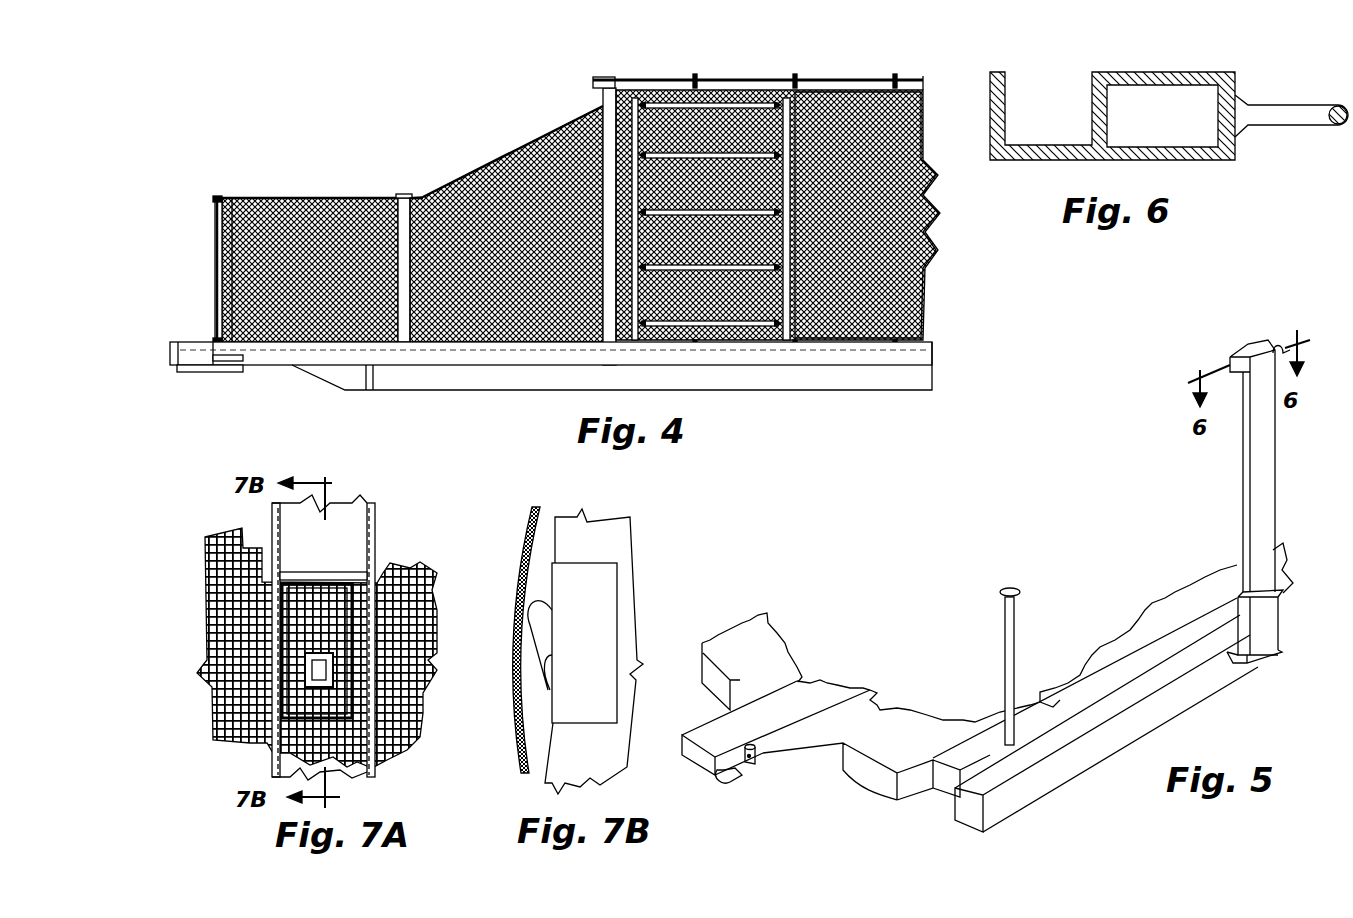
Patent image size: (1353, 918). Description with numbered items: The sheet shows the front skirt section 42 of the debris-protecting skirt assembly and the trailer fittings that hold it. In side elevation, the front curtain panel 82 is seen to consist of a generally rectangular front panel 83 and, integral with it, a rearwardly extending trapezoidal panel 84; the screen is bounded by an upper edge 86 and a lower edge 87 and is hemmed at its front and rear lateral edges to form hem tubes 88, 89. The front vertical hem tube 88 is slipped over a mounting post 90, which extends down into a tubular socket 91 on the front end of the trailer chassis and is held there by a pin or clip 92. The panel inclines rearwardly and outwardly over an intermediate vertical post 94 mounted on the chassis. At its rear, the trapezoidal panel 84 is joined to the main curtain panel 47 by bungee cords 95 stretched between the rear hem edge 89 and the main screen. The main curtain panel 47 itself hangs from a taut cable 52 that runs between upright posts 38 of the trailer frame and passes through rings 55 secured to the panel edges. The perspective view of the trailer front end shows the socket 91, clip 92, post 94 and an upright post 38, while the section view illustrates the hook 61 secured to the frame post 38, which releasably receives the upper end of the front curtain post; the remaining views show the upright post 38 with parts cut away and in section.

In FIG. 7A, the upright post 38 is at (362, 535).
In FIG. 7B, the upright post 38 is at (620, 535).
In FIG. 4, the front skirt section 42 is at (398, 158).
In FIG. 4, the curtain panel 47 is at (917, 283).
In FIG. 4, the cable 52 is at (760, 77).
In FIG. 4, the ring 55 is at (800, 192).
In FIG. 6, the hook 61 is at (1172, 160).
In FIG. 4, the front curtain panel 82 is at (332, 197).
In FIG. 4, the front panel 83 is at (275, 210).
In FIG. 4, the trapezoidal panel 84 is at (497, 177).
In FIG. 4, the upper edge 86 is at (453, 183).
In FIG. 4, the lower edge 87 is at (458, 343).
In FIG. 4, the hem tube 88 is at (215, 293).
In FIG. 4, the hem tube 89 is at (612, 342).
In FIG. 4, the mounting post 90 is at (220, 197).
In FIG. 4, the tubular socket 91 is at (232, 373).
In FIG. 5, the tubular socket 91 is at (760, 747).
In FIG. 4, the pin or clip 92 is at (233, 360).
In FIG. 5, the pin or clip 92 is at (730, 772).
In FIG. 5, the intermediate vertical post 94 is at (1005, 617).
In FIG. 4, the bungee cord 95 is at (717, 100).